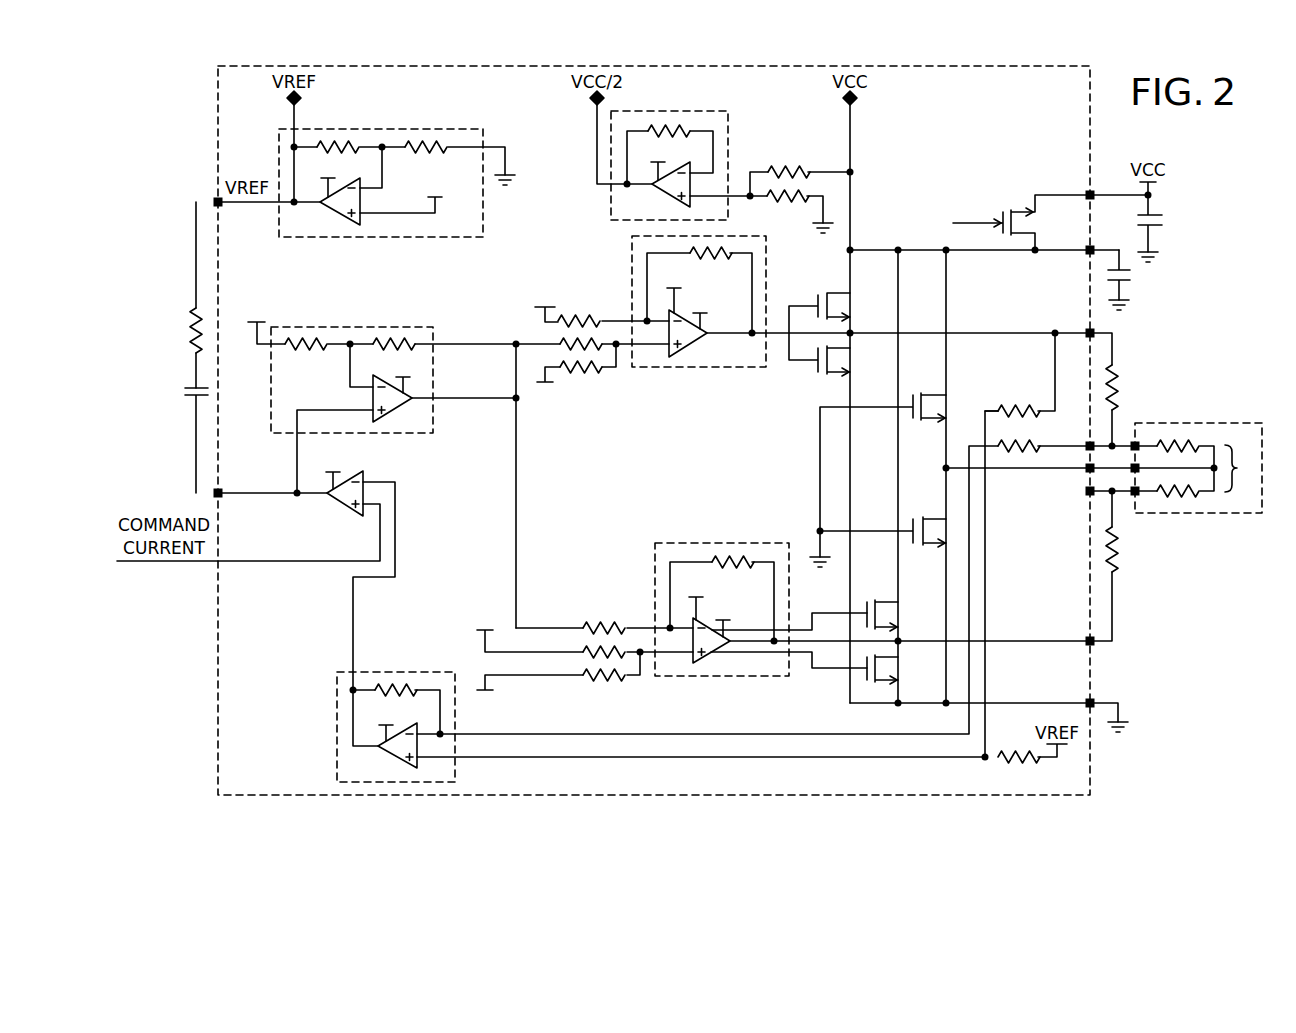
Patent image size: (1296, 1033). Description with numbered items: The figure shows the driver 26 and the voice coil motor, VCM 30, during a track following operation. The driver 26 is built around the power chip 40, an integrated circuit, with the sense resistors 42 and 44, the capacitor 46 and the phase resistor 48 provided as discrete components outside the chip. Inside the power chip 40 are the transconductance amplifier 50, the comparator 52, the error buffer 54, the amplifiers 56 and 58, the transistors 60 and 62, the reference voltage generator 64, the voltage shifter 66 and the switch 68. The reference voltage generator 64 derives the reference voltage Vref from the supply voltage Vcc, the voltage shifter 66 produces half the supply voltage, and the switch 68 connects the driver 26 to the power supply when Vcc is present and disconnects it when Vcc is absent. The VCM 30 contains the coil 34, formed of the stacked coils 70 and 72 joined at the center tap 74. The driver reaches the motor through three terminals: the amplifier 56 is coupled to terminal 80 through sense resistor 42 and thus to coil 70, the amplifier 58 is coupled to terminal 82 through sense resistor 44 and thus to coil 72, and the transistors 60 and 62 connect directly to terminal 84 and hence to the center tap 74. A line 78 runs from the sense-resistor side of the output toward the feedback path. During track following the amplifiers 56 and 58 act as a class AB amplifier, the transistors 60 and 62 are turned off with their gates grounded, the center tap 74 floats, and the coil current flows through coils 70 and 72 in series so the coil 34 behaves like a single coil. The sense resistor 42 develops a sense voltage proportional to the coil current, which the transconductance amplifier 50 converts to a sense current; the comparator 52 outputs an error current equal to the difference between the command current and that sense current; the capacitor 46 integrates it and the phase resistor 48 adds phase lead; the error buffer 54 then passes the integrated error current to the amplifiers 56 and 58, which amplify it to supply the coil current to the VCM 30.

The driver 26 is at (1127, 784).
The VCM 30 is at (1222, 423).
The coil 34 is at (1244, 468).
The power chip 40 is at (1015, 797).
The sense resistor 42 is at (1114, 390).
The sense resistor 44 is at (1118, 556).
The capacitor 46 is at (183, 392).
The phase resistor 48 is at (188, 330).
The transconductance amplifier 50 is at (397, 672).
The comparator 52 is at (343, 506).
The error buffer 54 is at (383, 327).
The amplifier 56 is at (690, 367).
The amplifier 58 is at (690, 543).
The transistor 60 is at (932, 423).
The transistor 62 is at (930, 547).
The reference voltage generator 64 is at (413, 129).
The voltage shifter 66 is at (687, 111).
The switch 68 is at (1022, 212).
The coil 70 is at (1178, 438).
The coil 72 is at (1178, 497).
The center tap 74 is at (1220, 473).
The sense line 78 is at (1107, 430).
The terminal 80 is at (1099, 445).
The terminal 82 is at (1103, 494).
The terminal 84 is at (1105, 471).